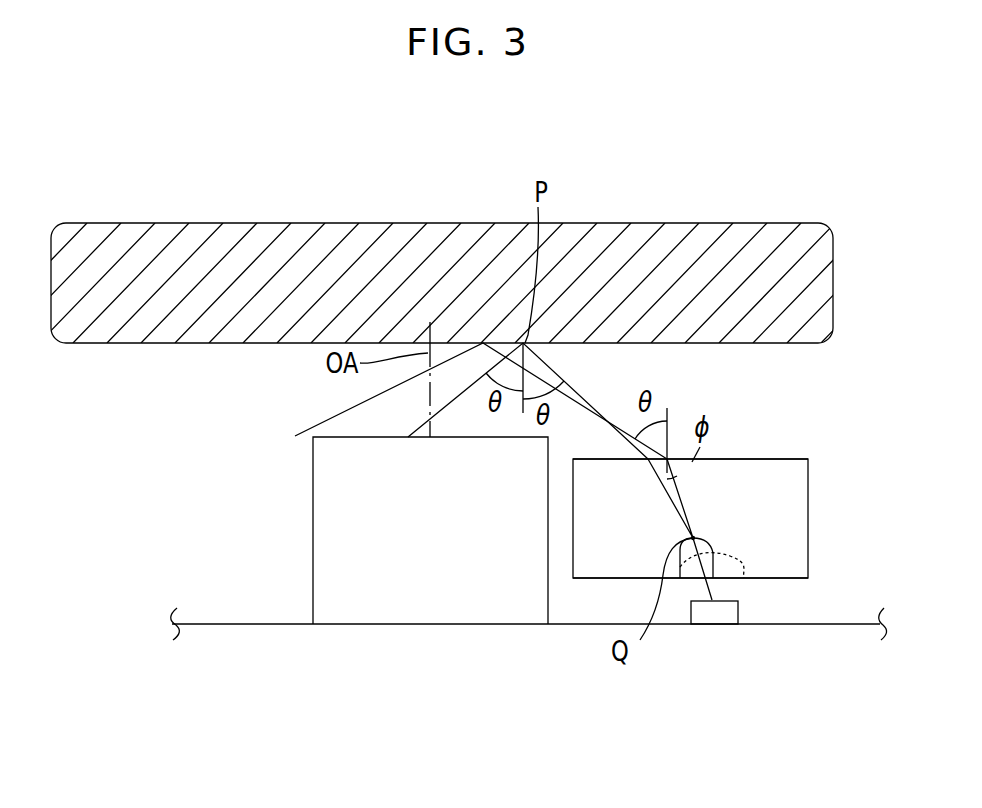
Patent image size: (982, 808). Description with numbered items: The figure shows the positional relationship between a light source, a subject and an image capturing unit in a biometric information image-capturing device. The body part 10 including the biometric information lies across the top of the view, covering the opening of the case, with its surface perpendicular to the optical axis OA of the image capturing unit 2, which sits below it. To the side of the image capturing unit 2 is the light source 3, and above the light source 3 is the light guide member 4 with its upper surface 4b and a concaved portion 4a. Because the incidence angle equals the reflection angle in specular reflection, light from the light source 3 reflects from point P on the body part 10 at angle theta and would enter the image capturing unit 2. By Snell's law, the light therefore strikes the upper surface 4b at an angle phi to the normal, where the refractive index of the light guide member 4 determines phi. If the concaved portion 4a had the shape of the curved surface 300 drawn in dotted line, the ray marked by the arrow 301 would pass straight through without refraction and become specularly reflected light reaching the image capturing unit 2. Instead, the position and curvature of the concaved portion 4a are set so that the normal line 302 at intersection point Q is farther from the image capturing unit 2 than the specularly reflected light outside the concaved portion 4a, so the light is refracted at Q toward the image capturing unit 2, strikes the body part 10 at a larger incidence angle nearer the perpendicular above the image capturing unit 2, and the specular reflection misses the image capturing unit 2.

The body part 10 is at (188, 343).
The image capturing unit 2 is at (453, 603).
The light source 3 is at (707, 612).
The light guide member 4 is at (808, 491).
The concaved portion 4a is at (702, 542).
The upper surface 4b is at (783, 459).
The curved surface 300 is at (742, 563).
The arrow 301 is at (690, 510).
The normal line 302 is at (693, 538).